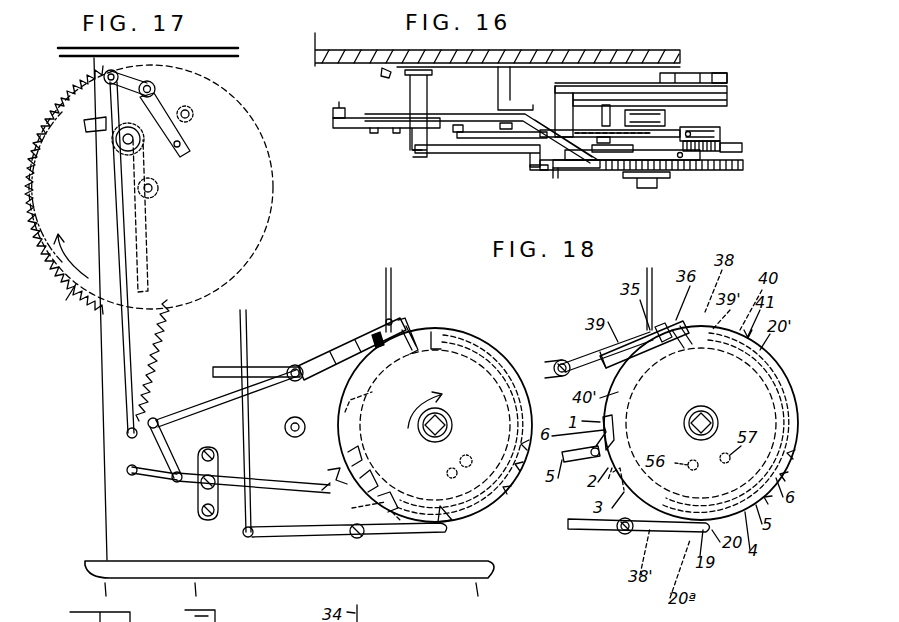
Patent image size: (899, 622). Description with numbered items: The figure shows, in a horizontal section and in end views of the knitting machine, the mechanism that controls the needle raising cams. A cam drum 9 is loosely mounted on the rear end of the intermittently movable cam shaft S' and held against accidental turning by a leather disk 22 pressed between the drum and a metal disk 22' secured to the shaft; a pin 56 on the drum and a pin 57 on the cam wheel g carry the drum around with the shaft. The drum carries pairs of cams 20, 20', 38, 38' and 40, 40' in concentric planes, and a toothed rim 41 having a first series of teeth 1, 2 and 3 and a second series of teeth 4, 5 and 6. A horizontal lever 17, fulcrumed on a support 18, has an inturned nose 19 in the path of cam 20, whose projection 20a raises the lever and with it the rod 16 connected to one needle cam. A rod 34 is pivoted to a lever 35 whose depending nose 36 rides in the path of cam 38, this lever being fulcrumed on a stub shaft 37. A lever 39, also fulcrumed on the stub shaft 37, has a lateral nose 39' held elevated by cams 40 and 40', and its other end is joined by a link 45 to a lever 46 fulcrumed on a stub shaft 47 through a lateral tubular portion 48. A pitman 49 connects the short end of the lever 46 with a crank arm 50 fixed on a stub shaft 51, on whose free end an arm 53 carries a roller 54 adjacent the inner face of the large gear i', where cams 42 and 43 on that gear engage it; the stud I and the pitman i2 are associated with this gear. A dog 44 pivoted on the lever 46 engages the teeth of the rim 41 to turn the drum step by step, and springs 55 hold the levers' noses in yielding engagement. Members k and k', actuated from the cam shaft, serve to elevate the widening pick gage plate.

In FIG. 18, the tooth 1 is at (358, 455).
In FIG. 18, the tooth 2 is at (372, 478).
In FIG. 18, the tooth 3 is at (390, 498).
In FIG. 18, the tooth 4 is at (505, 496).
In FIG. 18, the tooth 5 is at (518, 474).
In FIG. 18, the tooth 6 is at (527, 446).
In FIG. 18, the cam drum 9 is at (480, 358).
In FIG. 16, the cam drum 9 is at (700, 128).
In FIG. 17, the pitman or rod 16 is at (243, 310).
In FIG. 16, the pitman or rod 16 is at (458, 136).
In FIG. 17, the lever 17 is at (290, 545).
In FIG. 16, the lever 17 is at (460, 155).
In FIG. 16, the support 18 is at (575, 70).
In FIG. 18, the inturned nose 19 is at (446, 535).
In FIG. 18, the cam 20 is at (435, 433).
In FIG. 16, the cam 20 is at (646, 122).
In FIG. 18, the cam 20' is at (460, 404).
In FIG. 18, the projection 20a is at (458, 518).
In FIG. 16, the projection 20a is at (722, 144).
In FIG. 18, the leather disk 22 is at (446, 418).
In FIG. 16, the leather disk 22 is at (624, 209).
In FIG. 18, the metal disk 22' is at (410, 404).
In FIG. 16, the metal disk 22' is at (649, 198).
In FIG. 18, the rod or pitman 34 is at (392, 280).
In FIG. 16, the rod or pitman 34 is at (565, 180).
In FIG. 18, the lever 35 is at (368, 320).
In FIG. 16, the lever 35 is at (540, 168).
In FIG. 18, the depending nose 36 is at (350, 606).
In FIG. 16, the depending nose 36 is at (668, 180).
In FIG. 17, the stub shaft 37 is at (290, 368).
In FIG. 16, the stub shaft 37 is at (490, 140).
In FIG. 18, the cam 38 is at (353, 324).
In FIG. 18, the cam 38' is at (358, 513).
In FIG. 16, the cam 38' is at (675, 150).
In FIG. 17, the lever 39 is at (227, 398).
In FIG. 16, the lever 39 is at (481, 122).
In FIG. 18, the lateral nose 39' is at (417, 317).
In FIG. 16, the lateral nose 39' is at (600, 191).
In FIG. 18, the cam 40 is at (457, 402).
In FIG. 16, the cam 40 is at (722, 189).
In FIG. 18, the cam 40' is at (336, 404).
In FIG. 18, the toothed rim 41 is at (450, 324).
In FIG. 16, the toothed rim 41 is at (748, 178).
In FIG. 17, the cam 42 is at (162, 158).
In FIG. 17, the cam 43 is at (110, 150).
In FIG. 18, the dog 44 is at (328, 470).
In FIG. 16, the dog 44 is at (560, 166).
In FIG. 17, the link 45 is at (140, 452).
In FIG. 17, the lever 46 is at (160, 480).
In FIG. 16, the lever 46 is at (337, 128).
In FIG. 17, the stub shaft 47 is at (200, 498).
In FIG. 16, the stub shaft 47 is at (412, 150).
In FIG. 16, the lateral tubular portion 48 is at (405, 140).
In FIG. 17, the pitman 49 is at (122, 330).
In FIG. 16, the pitman 49 is at (336, 108).
In FIG. 17, the crank arm 50 is at (100, 86).
In FIG. 17, the stub shaft 51 is at (119, 77).
In FIG. 17, the arm 53 is at (160, 96).
In FIG. 17, the roller 54 is at (195, 114).
In FIG. 17, the spring 55 is at (160, 345).
In FIG. 18, the pin or stud 56 is at (450, 477).
In FIG. 16, the pin or stud 56 is at (606, 104).
In FIG. 18, the pin or stud 57 is at (472, 456).
In FIG. 16, the pin or stud 57 is at (632, 108).
In FIG. 17, the stud I is at (71, 242).
In FIG. 17, the large gear i' is at (64, 305).
In FIG. 17, the pitman i2 is at (150, 236).
In FIG. 16, the member k is at (469, 112).
In FIG. 16, the member k' is at (367, 51).
In FIG. 16, the cam wheel g is at (712, 76).
In FIG. 16, the cam shaft S' is at (641, 54).